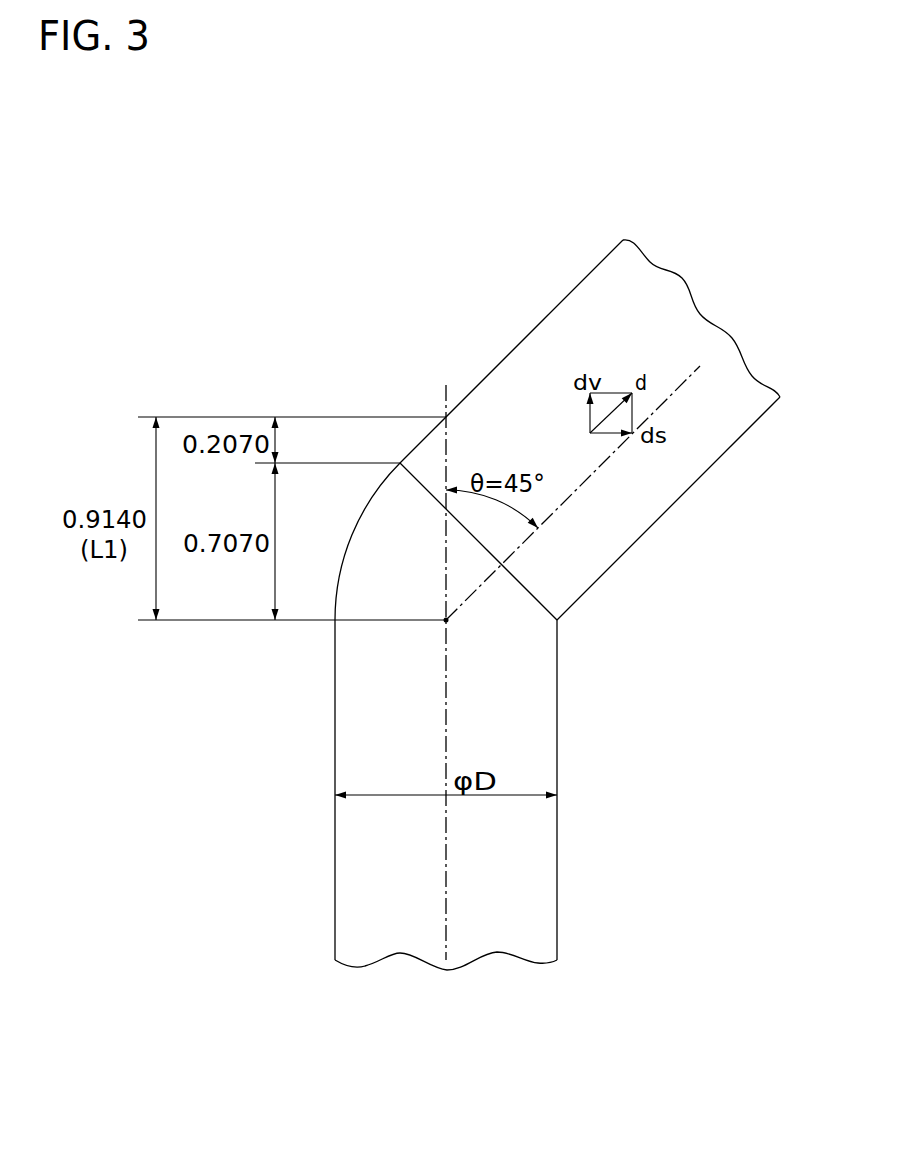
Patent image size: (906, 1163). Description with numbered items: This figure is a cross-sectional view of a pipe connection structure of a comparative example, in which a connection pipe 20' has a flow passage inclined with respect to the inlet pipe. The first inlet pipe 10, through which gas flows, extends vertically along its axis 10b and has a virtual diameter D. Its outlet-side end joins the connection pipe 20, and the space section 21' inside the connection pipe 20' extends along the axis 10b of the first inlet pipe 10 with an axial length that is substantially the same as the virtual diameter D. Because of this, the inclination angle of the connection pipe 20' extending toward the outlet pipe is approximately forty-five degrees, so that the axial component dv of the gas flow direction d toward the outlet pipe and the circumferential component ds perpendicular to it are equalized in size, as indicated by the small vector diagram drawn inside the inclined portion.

The first inlet pipe 10 is at (335, 908).
The axis of the first inlet pipe 10b is at (446, 848).
The connection pipe 20 is at (516, 456).
The connection pipe 20' is at (590, 430).
The space section 21' is at (346, 541).